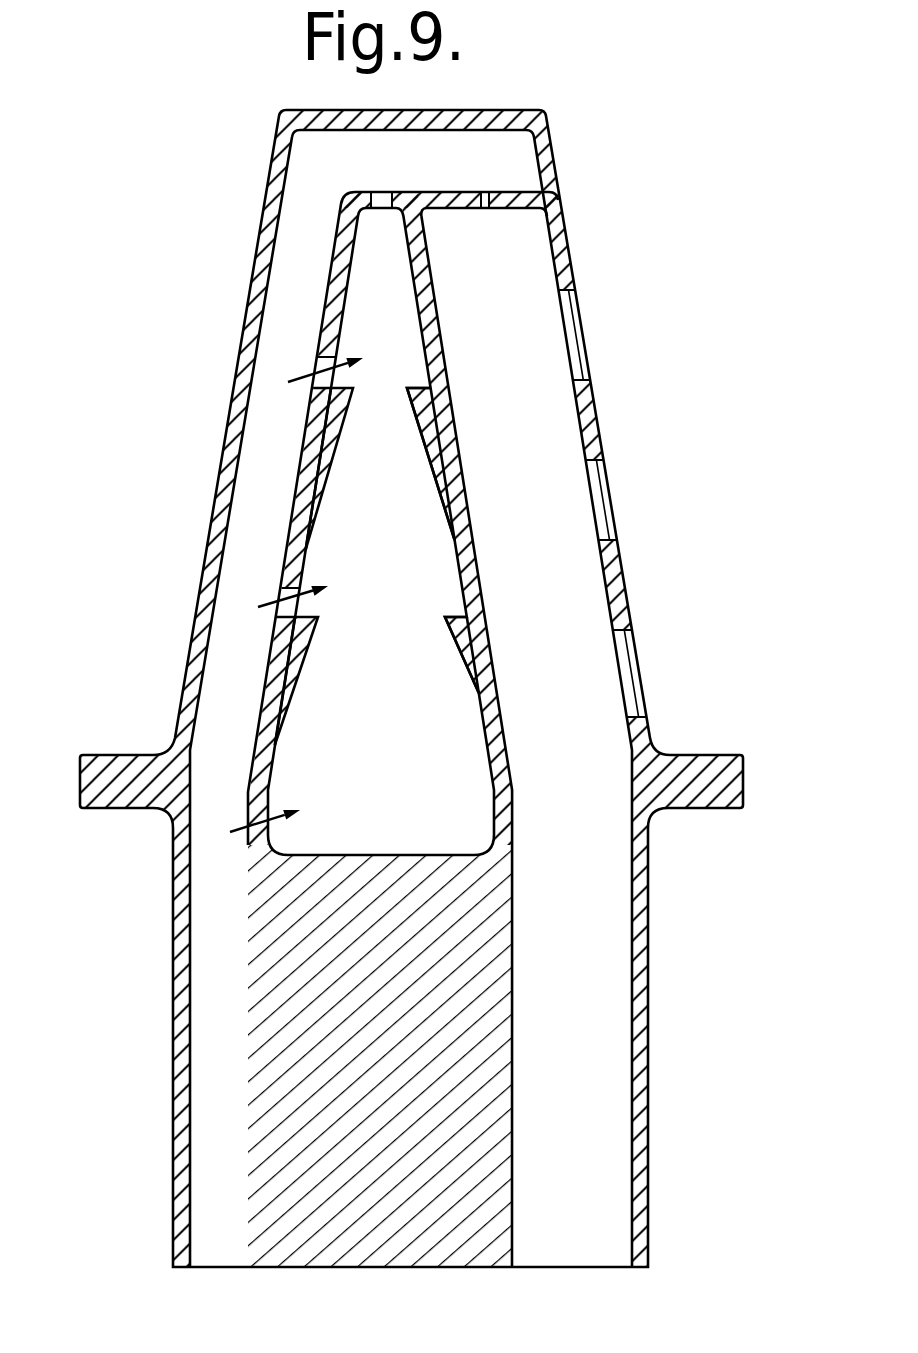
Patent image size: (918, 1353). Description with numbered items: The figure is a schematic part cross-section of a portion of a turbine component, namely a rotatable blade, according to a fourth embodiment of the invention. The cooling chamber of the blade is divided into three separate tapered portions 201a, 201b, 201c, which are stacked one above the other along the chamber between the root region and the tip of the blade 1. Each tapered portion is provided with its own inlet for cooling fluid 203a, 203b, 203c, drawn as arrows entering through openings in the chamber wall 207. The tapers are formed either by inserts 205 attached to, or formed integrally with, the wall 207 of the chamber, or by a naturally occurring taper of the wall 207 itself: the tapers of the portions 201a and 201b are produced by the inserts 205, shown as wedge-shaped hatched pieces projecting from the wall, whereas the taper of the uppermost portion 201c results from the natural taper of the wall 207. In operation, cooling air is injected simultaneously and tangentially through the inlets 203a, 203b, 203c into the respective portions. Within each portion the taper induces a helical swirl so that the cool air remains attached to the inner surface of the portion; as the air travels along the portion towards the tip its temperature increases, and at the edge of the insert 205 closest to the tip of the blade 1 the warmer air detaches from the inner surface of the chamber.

The blade 1 is at (272, 157).
The wall 207 is at (332, 270).
The inserts 205 is at (327, 440).
The inlet for cooling fluid 203a is at (258, 815).
The inlet for cooling fluid 203b is at (278, 587).
The inlet for cooling fluid 203c is at (322, 367).
The tapered portion 201a is at (429, 711).
The tapered portion 201b is at (427, 488).
The tapered portion 201c is at (388, 298).